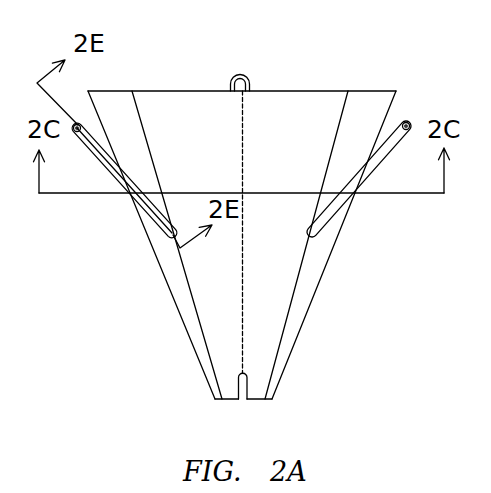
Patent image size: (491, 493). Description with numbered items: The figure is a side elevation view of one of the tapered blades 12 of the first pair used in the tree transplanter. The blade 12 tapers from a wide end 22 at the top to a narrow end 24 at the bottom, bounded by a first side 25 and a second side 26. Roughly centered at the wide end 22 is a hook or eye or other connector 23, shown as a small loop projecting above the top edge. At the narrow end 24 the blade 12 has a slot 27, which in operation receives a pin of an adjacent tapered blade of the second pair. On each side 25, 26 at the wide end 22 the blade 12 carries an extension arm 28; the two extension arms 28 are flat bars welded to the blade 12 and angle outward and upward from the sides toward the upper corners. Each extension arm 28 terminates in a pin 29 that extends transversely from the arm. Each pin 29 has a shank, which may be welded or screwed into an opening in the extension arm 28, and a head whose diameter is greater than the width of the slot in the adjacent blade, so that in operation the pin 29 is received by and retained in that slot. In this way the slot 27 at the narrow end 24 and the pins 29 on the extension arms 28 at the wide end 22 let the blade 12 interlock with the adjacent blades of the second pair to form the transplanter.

The tapered blade 12 is at (242, 236).
The wide end 22 is at (283, 95).
The hook or eye or other connector 23 is at (240, 73).
The narrow end 24 is at (260, 382).
The first side 25 is at (173, 280).
The second side 26 is at (323, 248).
The slot 27 is at (244, 399).
The extension arm 28 is at (122, 170).
The pin 29 is at (80, 126).